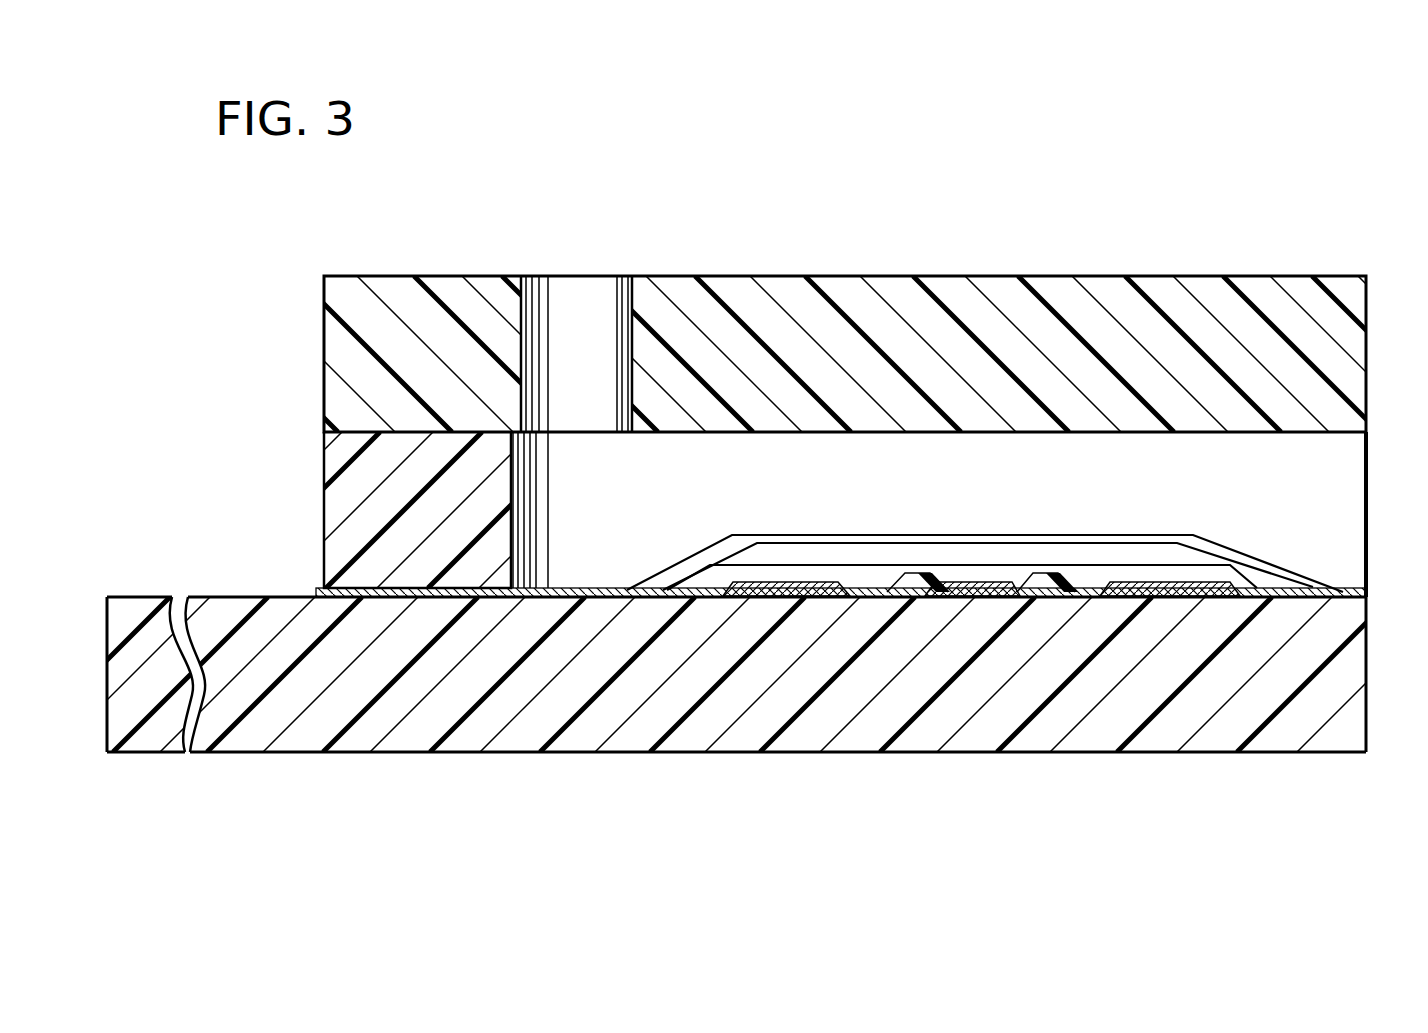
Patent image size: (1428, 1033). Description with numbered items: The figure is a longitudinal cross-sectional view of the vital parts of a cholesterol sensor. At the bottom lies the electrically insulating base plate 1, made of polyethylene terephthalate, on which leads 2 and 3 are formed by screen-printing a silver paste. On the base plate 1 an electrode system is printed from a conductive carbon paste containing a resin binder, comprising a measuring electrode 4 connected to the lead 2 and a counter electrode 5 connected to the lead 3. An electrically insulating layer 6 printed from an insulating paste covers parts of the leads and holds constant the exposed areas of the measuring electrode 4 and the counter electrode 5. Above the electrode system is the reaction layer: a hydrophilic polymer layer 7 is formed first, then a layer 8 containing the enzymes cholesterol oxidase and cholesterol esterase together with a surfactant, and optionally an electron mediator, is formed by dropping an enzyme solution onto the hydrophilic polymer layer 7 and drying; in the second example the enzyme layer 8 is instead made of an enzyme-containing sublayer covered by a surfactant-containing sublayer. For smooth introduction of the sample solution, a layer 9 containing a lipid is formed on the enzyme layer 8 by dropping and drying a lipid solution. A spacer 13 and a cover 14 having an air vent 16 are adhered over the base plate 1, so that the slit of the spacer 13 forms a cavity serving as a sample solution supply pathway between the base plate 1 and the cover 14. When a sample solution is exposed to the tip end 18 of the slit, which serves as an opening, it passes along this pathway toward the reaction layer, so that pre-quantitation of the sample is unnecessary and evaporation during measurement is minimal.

The base plate 1 is at (387, 752).
The lead 2 is at (968, 600).
The lead 3 is at (808, 600).
The measuring electrode 4 is at (970, 582).
The counter electrode 5 is at (785, 582).
The electrically insulating layer 6 is at (580, 588).
The hydrophilic polymer layer 7 is at (1263, 580).
The layer containing enzymes 8 is at (1250, 562).
The layer containing a lipid 9 is at (1207, 540).
The spacer 13 is at (338, 512).
The cover 14 is at (878, 225).
The air vent 16 is at (577, 276).
The tip end 18 is at (1372, 490).